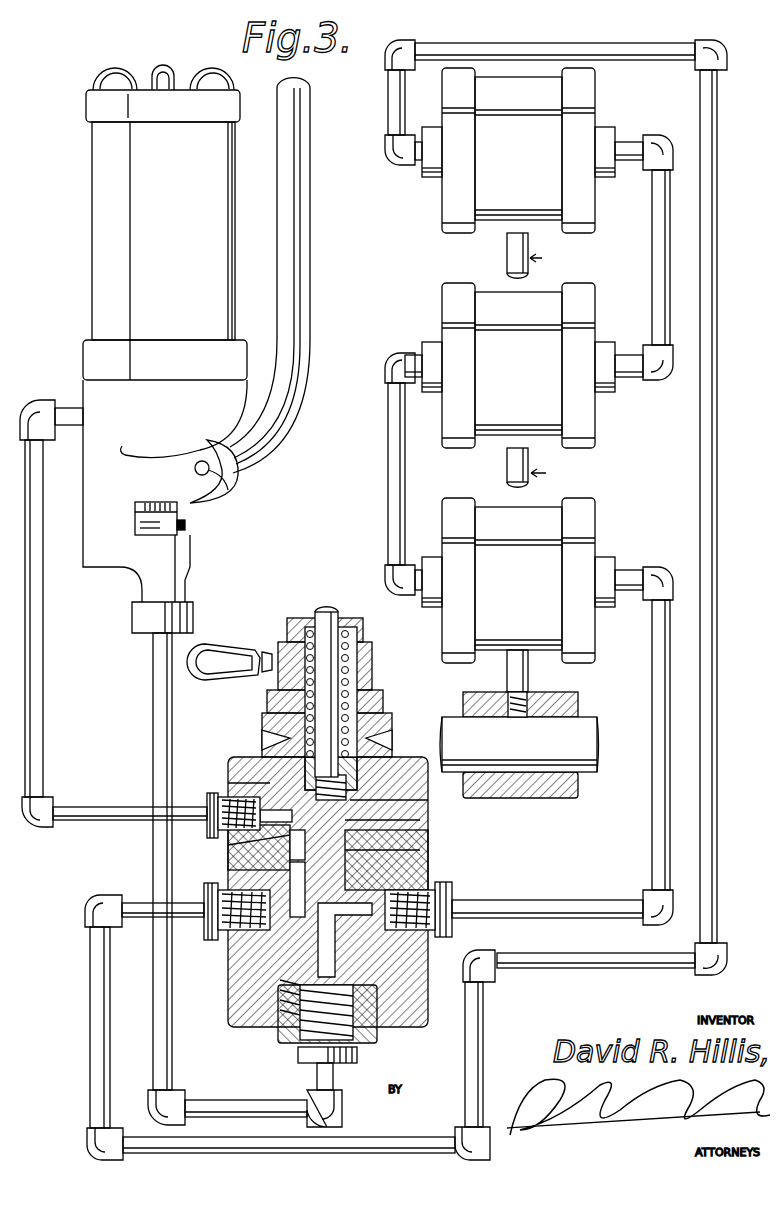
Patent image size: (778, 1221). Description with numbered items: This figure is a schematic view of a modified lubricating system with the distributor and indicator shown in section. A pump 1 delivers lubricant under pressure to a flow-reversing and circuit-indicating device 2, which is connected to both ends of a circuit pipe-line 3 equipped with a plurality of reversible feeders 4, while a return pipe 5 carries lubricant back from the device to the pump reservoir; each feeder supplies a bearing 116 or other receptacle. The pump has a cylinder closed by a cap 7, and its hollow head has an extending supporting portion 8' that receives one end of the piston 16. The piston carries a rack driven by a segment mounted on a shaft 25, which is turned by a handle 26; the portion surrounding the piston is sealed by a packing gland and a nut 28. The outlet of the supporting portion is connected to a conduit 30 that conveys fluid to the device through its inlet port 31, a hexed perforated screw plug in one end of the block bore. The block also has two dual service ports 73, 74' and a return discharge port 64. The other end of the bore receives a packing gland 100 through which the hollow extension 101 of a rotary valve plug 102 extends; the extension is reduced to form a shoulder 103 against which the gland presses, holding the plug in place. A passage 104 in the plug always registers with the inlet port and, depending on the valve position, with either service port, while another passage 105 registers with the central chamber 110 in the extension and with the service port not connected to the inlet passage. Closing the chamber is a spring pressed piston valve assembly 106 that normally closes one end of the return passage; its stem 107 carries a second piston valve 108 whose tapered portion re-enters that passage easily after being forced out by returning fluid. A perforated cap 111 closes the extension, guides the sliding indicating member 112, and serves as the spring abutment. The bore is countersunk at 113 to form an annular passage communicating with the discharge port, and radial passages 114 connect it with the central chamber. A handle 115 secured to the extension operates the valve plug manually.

The pump 1 is at (105, 256).
The flow-reversing and circuit-indicating device 2 is at (340, 808).
The circuit pipe-line 3 is at (670, 283).
The reversible feeder 4 is at (580, 97).
The return pipe 5 is at (43, 686).
The cap 7 is at (200, 78).
The supporting portion 8' is at (151, 486).
The piston 16 is at (190, 512).
The shaft 25 is at (228, 488).
The handle 26 is at (300, 252).
The nut 28 is at (188, 526).
The conduit 30 is at (172, 721).
The inlet port 31 is at (335, 1063).
The return discharge port 64 is at (206, 826).
The dual service port 73 is at (206, 922).
The dual service port 74' is at (439, 911).
The packing gland 100 is at (272, 742).
The hollow extension 101 is at (384, 700).
The rotary valve plug 102 is at (340, 868).
The shoulder 103 is at (290, 781).
The passage 104 is at (370, 955).
The passage 105 is at (300, 866).
The spring pressed piston valve assembly 106 is at (282, 778).
The stem 107 is at (258, 841).
The second piston valve 108 is at (380, 846).
The central chamber 110 is at (295, 683).
The perforated cap 111 is at (364, 628).
The indicating member 112 is at (322, 610).
The countersink 113 is at (350, 812).
The radial passages 114 is at (320, 800).
The handle 115 is at (236, 644).
The bearing 116 is at (575, 705).